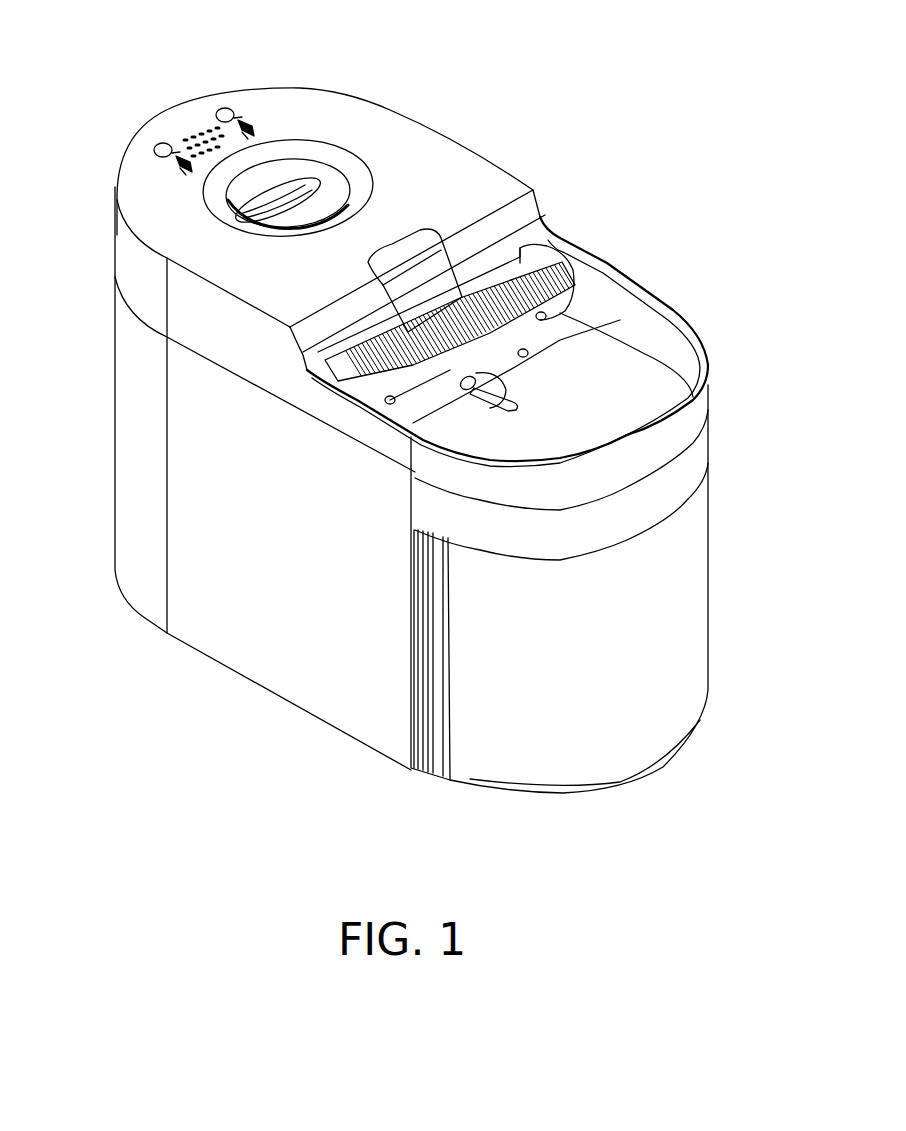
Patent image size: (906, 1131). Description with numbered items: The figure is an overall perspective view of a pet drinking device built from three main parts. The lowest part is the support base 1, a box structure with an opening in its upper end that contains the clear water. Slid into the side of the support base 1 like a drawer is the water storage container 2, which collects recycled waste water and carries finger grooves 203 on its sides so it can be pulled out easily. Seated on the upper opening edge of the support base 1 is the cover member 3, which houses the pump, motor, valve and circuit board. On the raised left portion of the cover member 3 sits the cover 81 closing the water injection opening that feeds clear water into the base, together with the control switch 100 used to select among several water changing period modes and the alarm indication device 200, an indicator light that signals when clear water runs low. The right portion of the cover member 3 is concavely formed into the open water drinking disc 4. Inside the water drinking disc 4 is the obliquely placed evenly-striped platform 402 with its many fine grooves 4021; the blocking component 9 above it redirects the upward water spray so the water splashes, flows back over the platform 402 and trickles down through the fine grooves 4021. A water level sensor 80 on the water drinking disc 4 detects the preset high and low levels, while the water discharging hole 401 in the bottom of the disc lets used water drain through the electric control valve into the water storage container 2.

The support base 1 is at (233, 647).
The water storage container 2 is at (697, 557).
The cover member 3 is at (467, 178).
The water drinking disc 4 is at (630, 380).
The blocking component 9 is at (420, 268).
The water level sensor 80 is at (546, 315).
The cover 81 is at (277, 178).
The control switch 100 is at (224, 108).
The alarm indication device 200 is at (158, 145).
The grooves 203 is at (440, 748).
The water discharging hole 401 is at (466, 395).
The evenly-striped platform 402 is at (557, 263).
The fine grooves 4021 is at (375, 395).